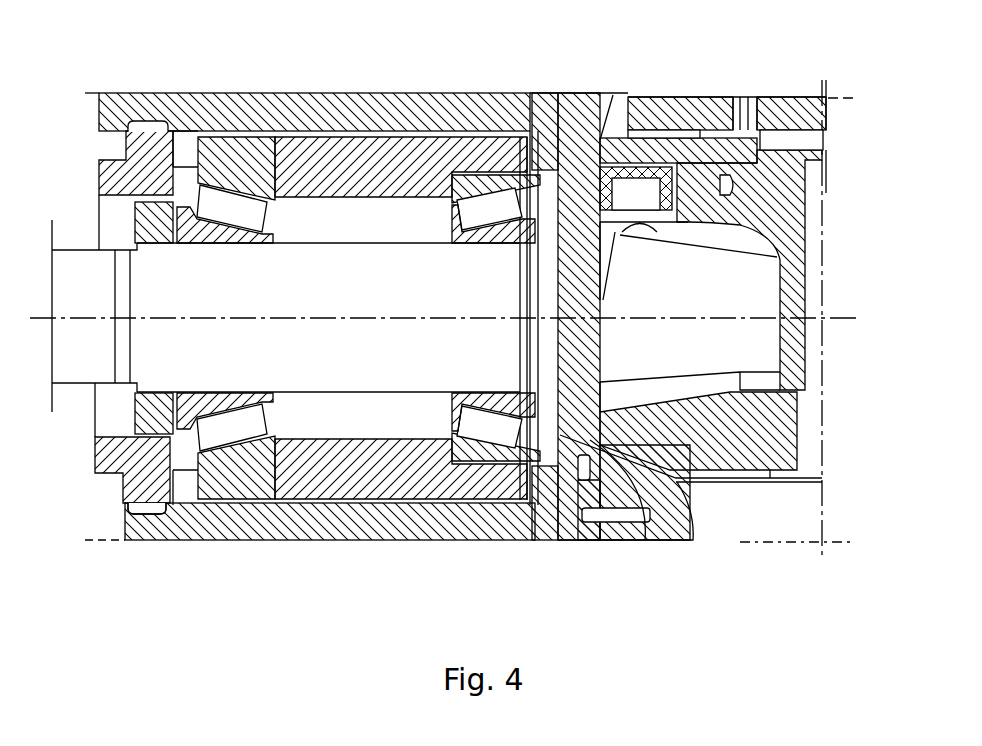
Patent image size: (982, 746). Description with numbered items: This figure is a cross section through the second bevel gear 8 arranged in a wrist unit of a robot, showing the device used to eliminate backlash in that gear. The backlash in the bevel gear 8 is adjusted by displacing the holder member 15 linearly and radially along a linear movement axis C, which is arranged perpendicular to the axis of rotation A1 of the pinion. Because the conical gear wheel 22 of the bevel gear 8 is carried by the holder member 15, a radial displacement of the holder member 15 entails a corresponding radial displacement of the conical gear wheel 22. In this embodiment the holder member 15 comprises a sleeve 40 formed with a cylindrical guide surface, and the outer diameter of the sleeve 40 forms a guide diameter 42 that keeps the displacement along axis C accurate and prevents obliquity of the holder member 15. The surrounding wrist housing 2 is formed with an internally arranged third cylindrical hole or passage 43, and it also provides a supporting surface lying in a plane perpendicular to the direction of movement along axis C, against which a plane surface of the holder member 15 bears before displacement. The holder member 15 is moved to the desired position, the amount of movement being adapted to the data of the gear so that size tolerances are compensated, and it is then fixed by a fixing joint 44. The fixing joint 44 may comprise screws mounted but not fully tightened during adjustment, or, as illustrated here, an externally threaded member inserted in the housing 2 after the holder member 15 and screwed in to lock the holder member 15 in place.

The wrist housing 2 is at (448, 518).
The second bevel gear 8 is at (702, 385).
The holder member 15 is at (337, 480).
The conical gear wheel 22 is at (680, 275).
The sleeve 40 is at (567, 530).
The guide diameter 42 is at (533, 150).
The third cylindrical hole/passage 43 is at (640, 470).
The fixing joint 44 is at (150, 505).
The linear movement axis C is at (528, 530).
The axis of rotation A1 is at (462, 319).